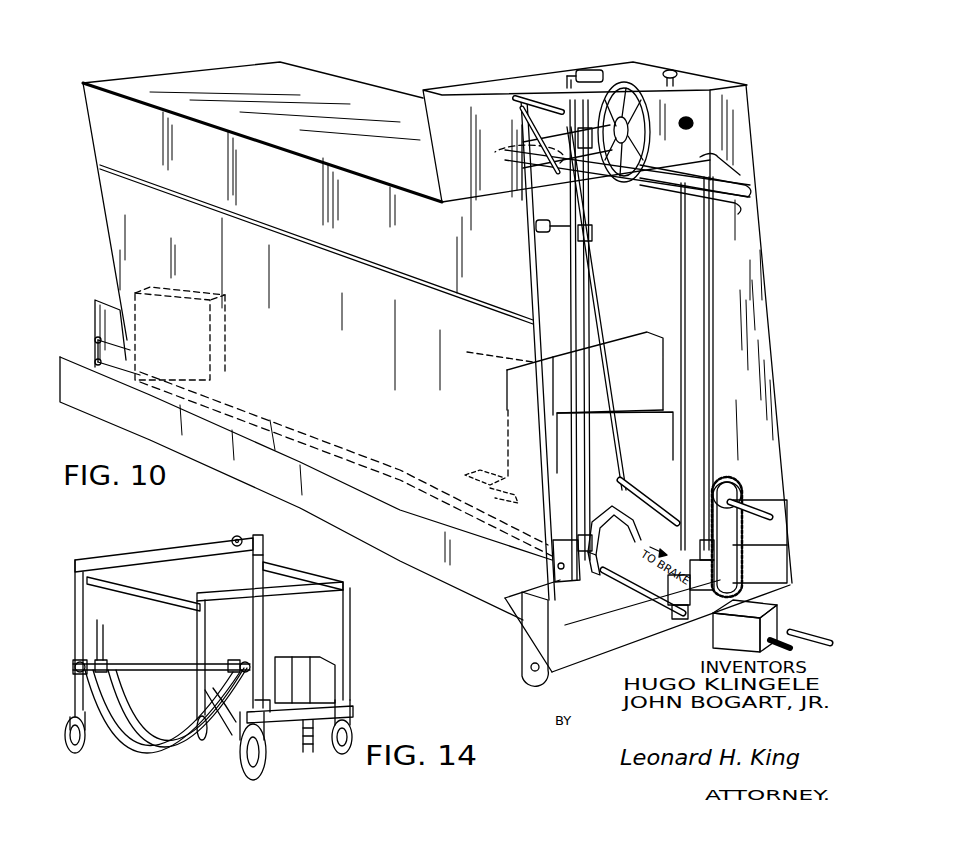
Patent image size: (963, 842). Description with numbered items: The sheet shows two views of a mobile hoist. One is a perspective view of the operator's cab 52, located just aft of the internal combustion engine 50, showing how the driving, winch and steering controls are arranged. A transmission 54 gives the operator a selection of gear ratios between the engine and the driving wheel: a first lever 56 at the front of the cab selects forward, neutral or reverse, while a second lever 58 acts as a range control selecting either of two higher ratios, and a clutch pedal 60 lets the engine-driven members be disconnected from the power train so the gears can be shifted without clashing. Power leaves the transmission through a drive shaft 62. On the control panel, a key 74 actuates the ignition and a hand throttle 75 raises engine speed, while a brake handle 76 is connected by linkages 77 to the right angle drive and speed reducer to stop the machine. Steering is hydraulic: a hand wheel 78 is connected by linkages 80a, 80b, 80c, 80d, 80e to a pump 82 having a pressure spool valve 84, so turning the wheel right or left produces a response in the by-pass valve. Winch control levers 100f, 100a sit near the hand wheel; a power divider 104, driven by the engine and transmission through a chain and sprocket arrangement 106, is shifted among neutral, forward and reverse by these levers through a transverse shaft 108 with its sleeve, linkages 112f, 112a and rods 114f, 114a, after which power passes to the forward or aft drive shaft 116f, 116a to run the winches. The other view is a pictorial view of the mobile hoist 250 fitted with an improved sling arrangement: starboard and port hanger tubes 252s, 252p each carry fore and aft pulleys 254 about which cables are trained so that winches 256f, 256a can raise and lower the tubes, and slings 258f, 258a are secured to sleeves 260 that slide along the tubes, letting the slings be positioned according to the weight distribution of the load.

In FIG. 10, the operator's cab 52 is at (296, 74).
In FIG. 10, the internal combustion engine 50 is at (618, 327).
In FIG. 10, the transmission 54 is at (622, 447).
In FIG. 10, the first lever 56 is at (594, 68).
In FIG. 10, the second lever 58 is at (557, 236).
In FIG. 10, the clutch pedal 60 is at (607, 557).
In FIG. 10, the drive shaft 62 is at (745, 502).
In FIG. 10, the key 74 is at (683, 128).
In FIG. 10, the hand throttle 75 is at (673, 70).
In FIG. 10, the brake handle 76 is at (533, 94).
In FIG. 10, the linkages 77 is at (668, 522).
In FIG. 10, the hand wheel 78 is at (619, 82).
In FIG. 10, the linkage 80a is at (590, 170).
In FIG. 10, the linkage 80b is at (547, 566).
In FIG. 10, the linkage 80c is at (118, 375).
In FIG. 10, the linkage 80d is at (96, 344).
In FIG. 10, the linkage 80e is at (96, 364).
In FIG. 10, the pump 82 is at (94, 312).
In FIG. 10, the pressure spool valve 84 is at (152, 349).
In FIG. 10, the aft winch control lever 100a is at (750, 198).
In FIG. 10, the forward winch control lever 100f is at (750, 172).
In FIG. 10, the power divider 104 is at (712, 633).
In FIG. 10, the chain and sprocket arrangement 106 is at (723, 472).
In FIG. 10, the transverse shaft 108 is at (556, 662).
In FIG. 10, the linkage 112a is at (680, 237).
In FIG. 10, the linkage 112f is at (708, 280).
In FIG. 10, the rod 114a is at (725, 604).
In FIG. 10, the rod 114f is at (680, 623).
In FIG. 10, the drive shaft 116a is at (810, 630).
In FIG. 10, the drive shaft 116f is at (634, 594).
In FIG. 14, the mobile hoist 250 is at (118, 542).
In FIG. 14, the port hanger tube 252p is at (76, 662).
In FIG. 14, the starboard hanger tube 252s is at (272, 660).
In FIG. 14, the pulley 254 is at (104, 662).
In FIG. 14, the aft winch 256a is at (278, 708).
In FIG. 14, the fore winch 256f is at (367, 693).
In FIG. 14, the aft sling 258a is at (160, 752).
In FIG. 14, the fore sling 258f is at (226, 722).
In FIG. 14, the sleeves 260 is at (77, 669).